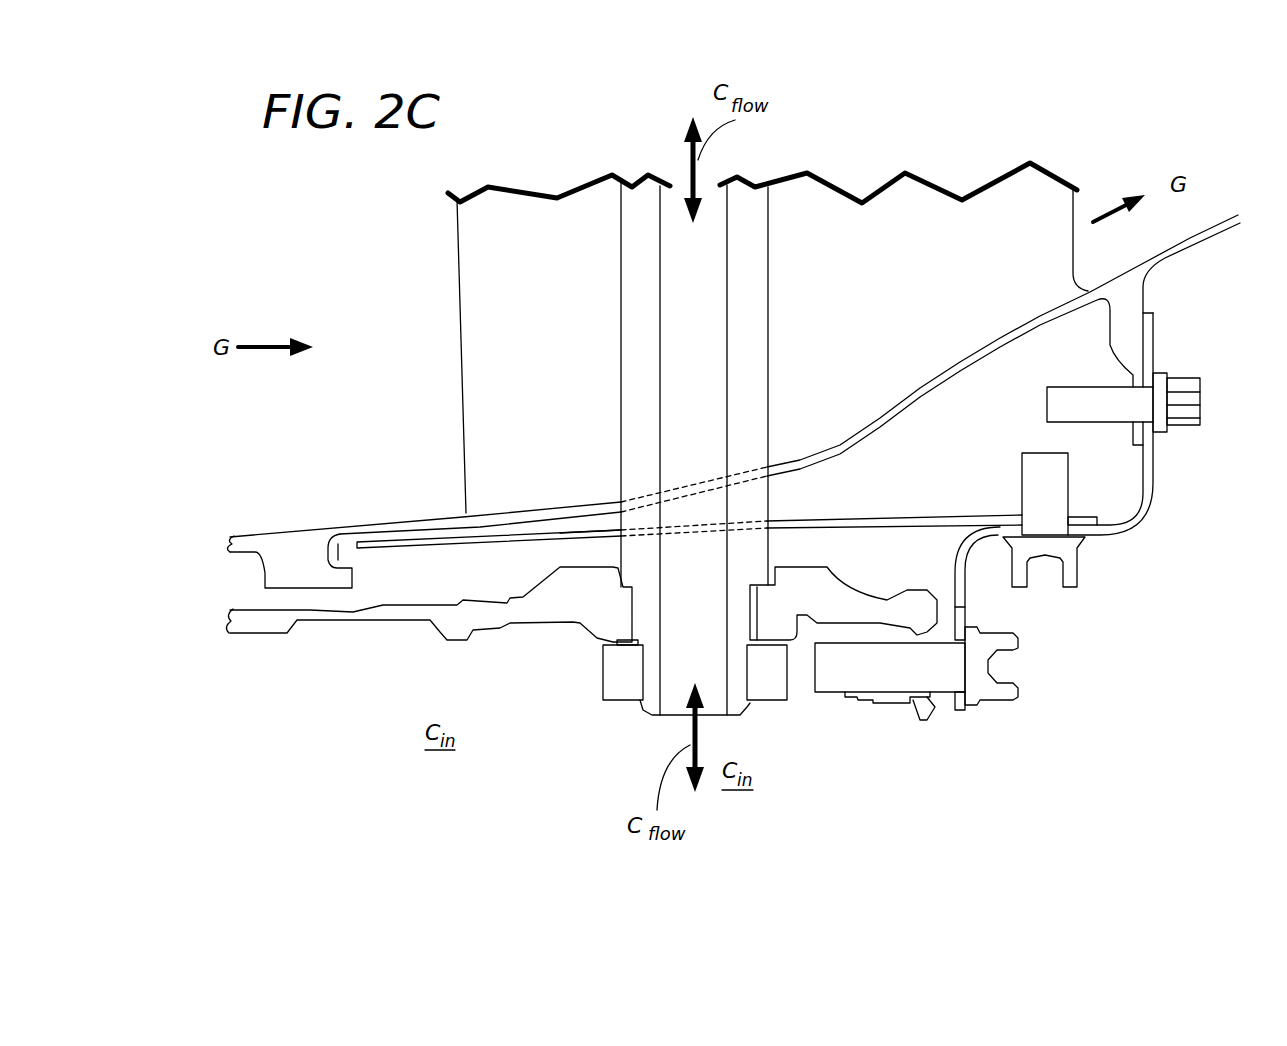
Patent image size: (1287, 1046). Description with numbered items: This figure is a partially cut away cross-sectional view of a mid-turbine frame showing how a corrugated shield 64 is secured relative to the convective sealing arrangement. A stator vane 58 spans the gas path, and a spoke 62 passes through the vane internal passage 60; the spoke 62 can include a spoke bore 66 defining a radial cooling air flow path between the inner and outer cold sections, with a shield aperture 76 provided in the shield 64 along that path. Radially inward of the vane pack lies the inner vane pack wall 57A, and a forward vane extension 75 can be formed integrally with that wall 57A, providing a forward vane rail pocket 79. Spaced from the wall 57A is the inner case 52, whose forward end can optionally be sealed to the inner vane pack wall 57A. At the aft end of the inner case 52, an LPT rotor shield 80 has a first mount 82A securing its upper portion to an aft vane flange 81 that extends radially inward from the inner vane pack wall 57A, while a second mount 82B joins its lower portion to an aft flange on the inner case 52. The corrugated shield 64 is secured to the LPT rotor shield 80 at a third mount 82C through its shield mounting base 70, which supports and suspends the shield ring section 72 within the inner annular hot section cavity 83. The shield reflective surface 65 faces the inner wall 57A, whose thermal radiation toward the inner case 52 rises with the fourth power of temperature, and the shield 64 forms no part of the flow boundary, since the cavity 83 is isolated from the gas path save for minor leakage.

The inner case 52 is at (595, 615).
The inner vane pack wall 57A is at (872, 424).
The stator vane 58 is at (452, 306).
The vane internal passage 60 is at (743, 468).
The spoke 62 is at (612, 306).
The corrugated shield 64 is at (932, 504).
The shield reflective surface 65 is at (530, 530).
The spoke bore 66 is at (690, 266).
The shield mounting base 70 is at (992, 520).
The shield ring section 72 is at (595, 521).
The forward vane extension 75 is at (238, 516).
The shield aperture 76 is at (720, 527).
The forward vane rail pocket 79 is at (343, 547).
The LPT rotor shield 80 is at (1150, 540).
The aft vane flange 81 is at (1115, 323).
The first aft seal mount 82A is at (1190, 443).
The second aft seal mount 82B is at (990, 710).
The third aft seal mount 82C is at (1050, 584).
The inner annular hot section cavity 83 is at (515, 577).